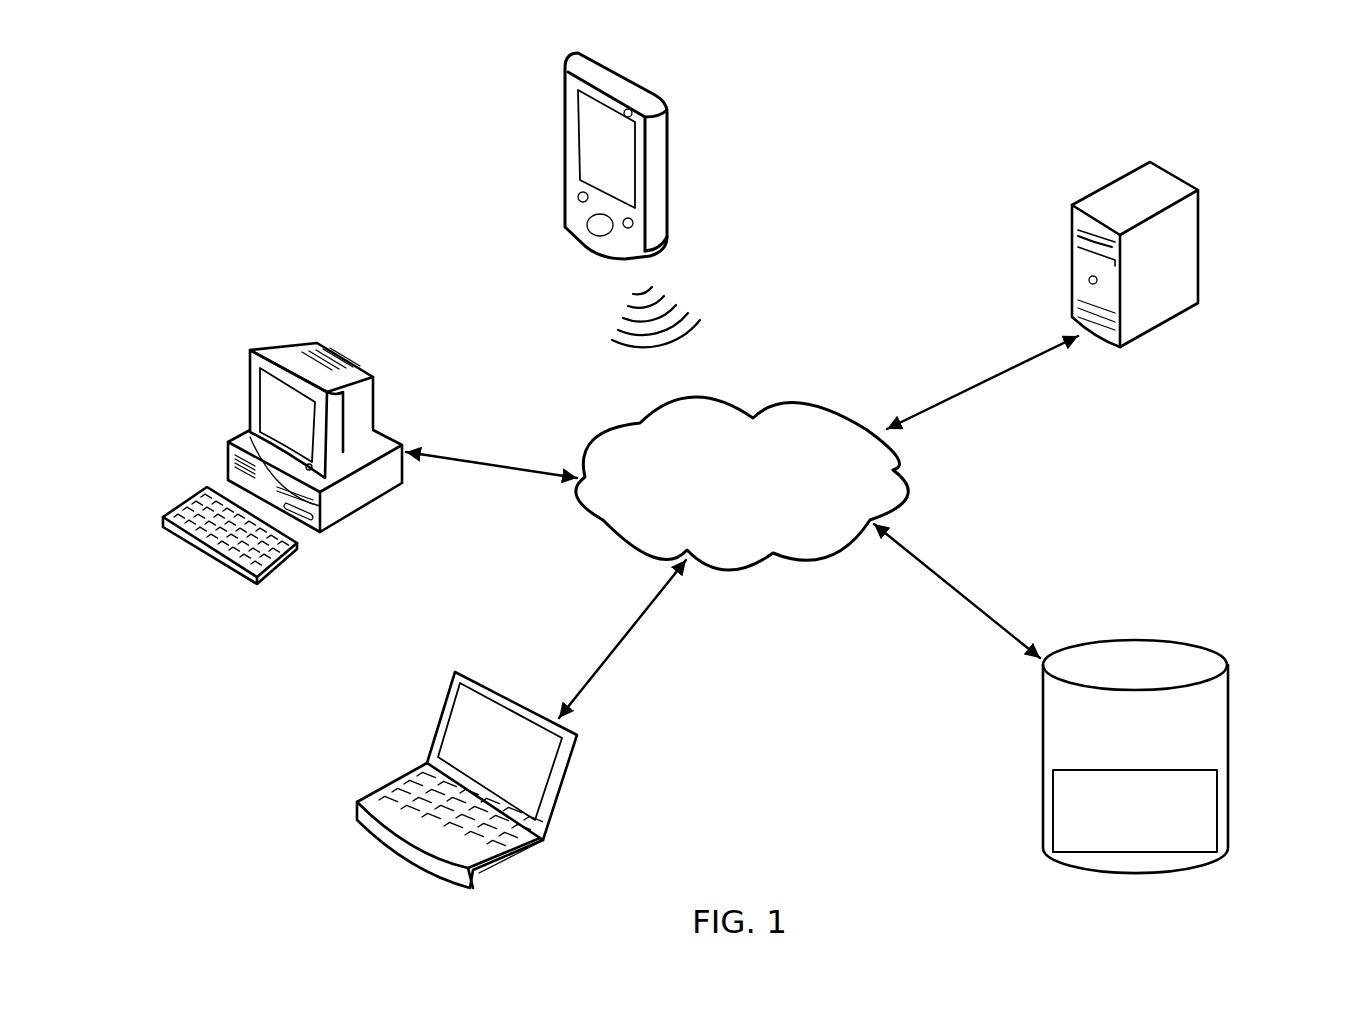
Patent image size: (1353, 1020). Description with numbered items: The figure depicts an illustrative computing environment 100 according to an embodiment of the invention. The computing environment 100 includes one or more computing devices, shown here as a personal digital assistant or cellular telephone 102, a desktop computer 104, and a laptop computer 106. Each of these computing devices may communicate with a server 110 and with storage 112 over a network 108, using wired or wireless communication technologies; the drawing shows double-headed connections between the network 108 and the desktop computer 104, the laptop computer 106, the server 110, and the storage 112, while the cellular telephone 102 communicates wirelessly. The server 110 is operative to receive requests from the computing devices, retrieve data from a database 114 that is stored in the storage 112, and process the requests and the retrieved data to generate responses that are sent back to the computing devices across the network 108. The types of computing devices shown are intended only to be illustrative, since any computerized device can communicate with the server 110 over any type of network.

The computing environment 100 is at (232, 38).
The personal digital assistant or cellular telephone 102 is at (660, 97).
The desktop computer 104 is at (267, 340).
The laptop computer 106 is at (455, 672).
The network 108 is at (808, 402).
The server 110 is at (1150, 162).
The storage 112 is at (1175, 733).
The database 114 is at (1115, 836).